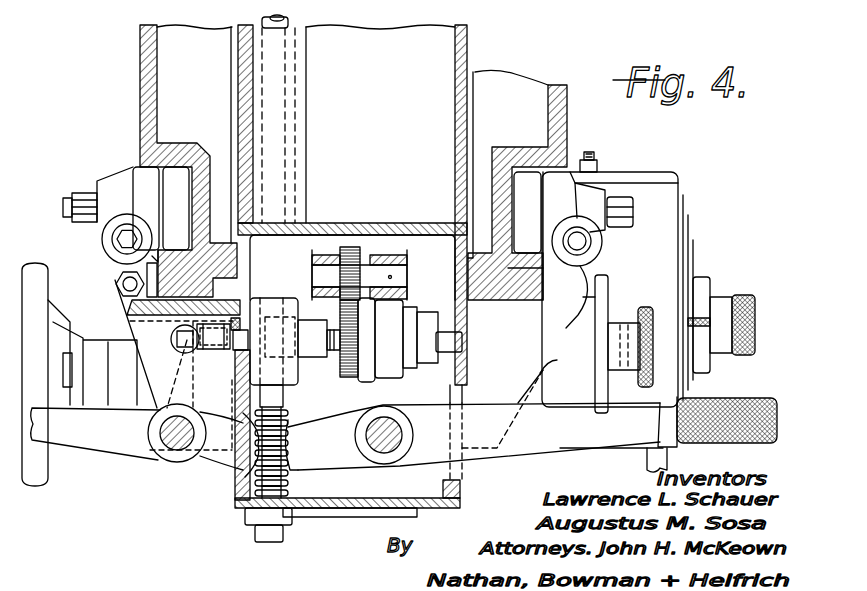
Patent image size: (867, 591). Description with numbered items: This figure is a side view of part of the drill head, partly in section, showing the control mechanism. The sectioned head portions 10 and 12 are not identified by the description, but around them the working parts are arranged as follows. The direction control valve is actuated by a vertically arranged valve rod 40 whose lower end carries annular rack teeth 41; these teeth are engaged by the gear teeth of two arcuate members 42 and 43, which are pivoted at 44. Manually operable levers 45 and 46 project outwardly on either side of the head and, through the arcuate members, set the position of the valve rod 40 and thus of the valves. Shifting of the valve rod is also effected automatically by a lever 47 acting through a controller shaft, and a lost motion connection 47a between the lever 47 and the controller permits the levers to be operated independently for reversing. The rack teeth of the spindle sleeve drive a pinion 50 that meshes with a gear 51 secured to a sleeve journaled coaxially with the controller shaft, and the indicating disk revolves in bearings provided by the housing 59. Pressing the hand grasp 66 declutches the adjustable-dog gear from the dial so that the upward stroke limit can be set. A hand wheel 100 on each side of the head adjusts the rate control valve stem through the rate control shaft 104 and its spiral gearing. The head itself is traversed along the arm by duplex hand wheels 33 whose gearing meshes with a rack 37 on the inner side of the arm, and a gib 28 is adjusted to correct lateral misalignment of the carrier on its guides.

The housing 10 is at (140, 81).
The housing cavity 12 is at (352, 205).
The gib 28 is at (153, 281).
The hand wheels 33 is at (52, 483).
The rack 37 is at (228, 283).
The valve rod 40 is at (290, 20).
The rack teeth 41 is at (285, 411).
The arcuate member 42 is at (302, 468).
The arcuate member 43 is at (222, 457).
The pivot 44 is at (178, 452).
The manually operable lever 45 is at (518, 455).
The manually operable lever 46 is at (110, 452).
The lever 47 is at (174, 344).
The lost motion connection 47a is at (213, 358).
The pinion 50 is at (357, 252).
The gear 51 is at (350, 378).
The housing 59 is at (668, 191).
The hand grasp 66 is at (746, 295).
The hand wheel 100 is at (646, 307).
The rate control shaft 104 is at (445, 338).